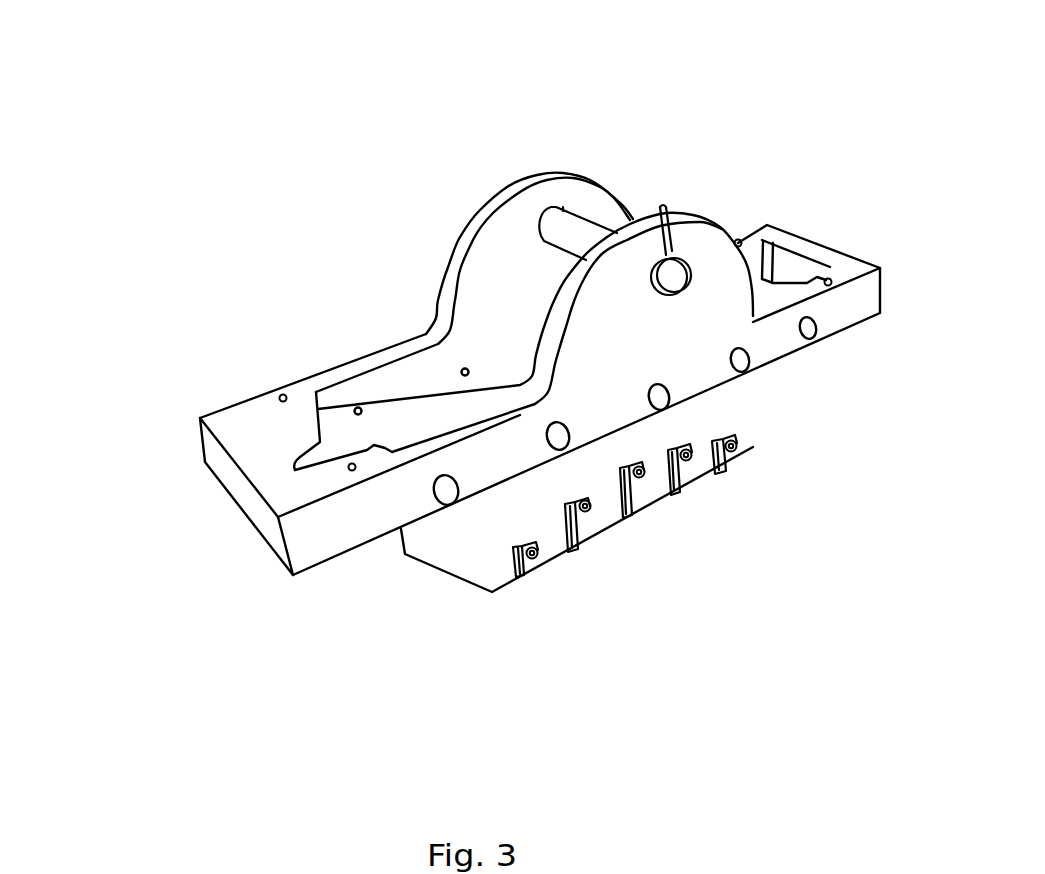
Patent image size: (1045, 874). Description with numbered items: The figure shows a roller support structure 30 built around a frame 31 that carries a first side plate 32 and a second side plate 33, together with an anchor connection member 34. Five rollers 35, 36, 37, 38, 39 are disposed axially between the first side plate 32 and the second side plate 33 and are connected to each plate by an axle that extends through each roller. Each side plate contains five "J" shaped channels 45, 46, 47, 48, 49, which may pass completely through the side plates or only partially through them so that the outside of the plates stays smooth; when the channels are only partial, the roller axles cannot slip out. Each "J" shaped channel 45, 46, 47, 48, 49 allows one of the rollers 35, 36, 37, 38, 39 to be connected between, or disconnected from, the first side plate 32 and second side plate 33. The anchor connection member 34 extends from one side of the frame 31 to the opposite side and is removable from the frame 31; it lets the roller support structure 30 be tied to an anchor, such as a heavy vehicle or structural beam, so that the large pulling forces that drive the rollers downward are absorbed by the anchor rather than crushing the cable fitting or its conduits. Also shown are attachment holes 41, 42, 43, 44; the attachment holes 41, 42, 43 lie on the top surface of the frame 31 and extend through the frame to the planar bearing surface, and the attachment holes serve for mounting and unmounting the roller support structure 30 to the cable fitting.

The roller support structure 30 is at (671, 126).
The frame 31 is at (231, 412).
The first side plate 32 is at (733, 413).
The second side plate 33 is at (392, 397).
The anchor connection member 34 is at (553, 222).
The roller 35 is at (517, 573).
The roller 36 is at (603, 625).
The roller 37 is at (620, 623).
The roller 38 is at (647, 627).
The roller 39 is at (675, 628).
The attachment hole 41 is at (762, 228).
The attachment hole 42 is at (792, 152).
The attachment hole 43 is at (279, 403).
The attachment hole 44 is at (163, 527).
The "J" shaped channel 45 is at (513, 548).
The "J" shaped channel 46 is at (290, 602).
The "J" shaped channel 47 is at (290, 602).
The "J" shaped channel 48 is at (290, 602).
The "J" shaped channel 49 is at (290, 602).